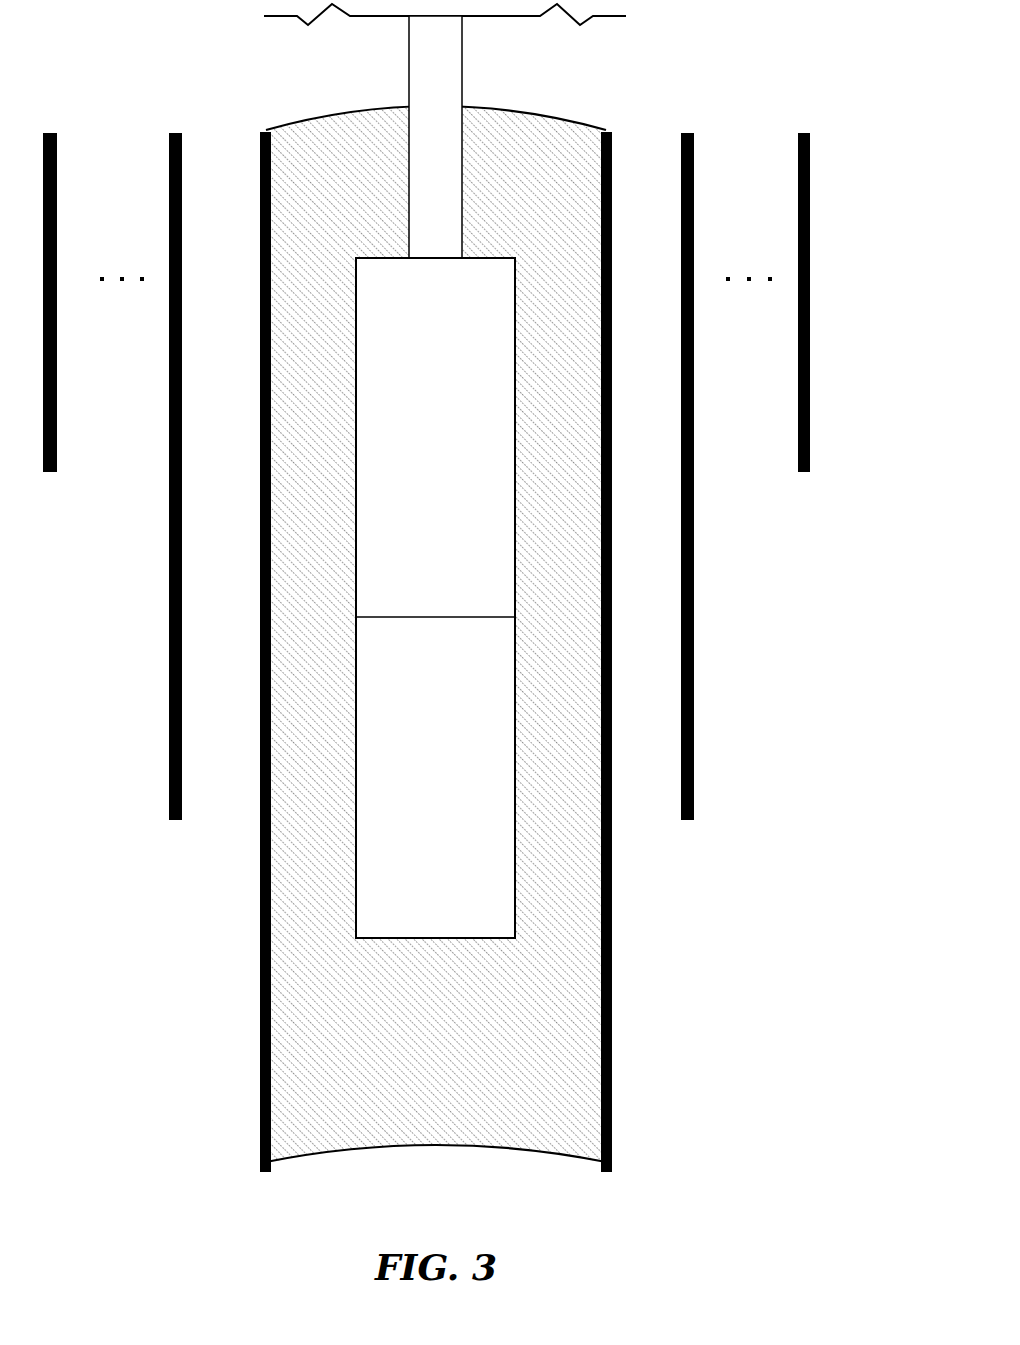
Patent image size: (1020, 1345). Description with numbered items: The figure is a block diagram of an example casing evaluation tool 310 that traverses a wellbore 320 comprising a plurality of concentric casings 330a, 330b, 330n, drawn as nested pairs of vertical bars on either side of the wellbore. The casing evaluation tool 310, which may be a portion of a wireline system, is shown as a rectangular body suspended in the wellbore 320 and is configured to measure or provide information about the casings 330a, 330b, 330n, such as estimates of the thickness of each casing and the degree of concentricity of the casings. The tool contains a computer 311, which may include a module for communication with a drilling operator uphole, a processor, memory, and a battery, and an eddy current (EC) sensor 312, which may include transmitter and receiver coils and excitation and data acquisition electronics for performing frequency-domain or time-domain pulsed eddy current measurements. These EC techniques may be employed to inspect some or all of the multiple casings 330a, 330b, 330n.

The casing evaluation tool 310 is at (489, 477).
The computer 311 is at (435, 437).
The eddy current (EC) sensor 312 is at (435, 777).
The wellbore 320 is at (316, 1049).
The casing 330a is at (618, 949).
The casing 330b is at (700, 759).
The casing 330n is at (816, 396).